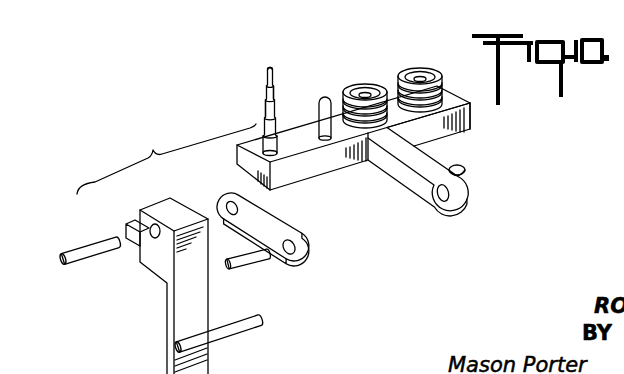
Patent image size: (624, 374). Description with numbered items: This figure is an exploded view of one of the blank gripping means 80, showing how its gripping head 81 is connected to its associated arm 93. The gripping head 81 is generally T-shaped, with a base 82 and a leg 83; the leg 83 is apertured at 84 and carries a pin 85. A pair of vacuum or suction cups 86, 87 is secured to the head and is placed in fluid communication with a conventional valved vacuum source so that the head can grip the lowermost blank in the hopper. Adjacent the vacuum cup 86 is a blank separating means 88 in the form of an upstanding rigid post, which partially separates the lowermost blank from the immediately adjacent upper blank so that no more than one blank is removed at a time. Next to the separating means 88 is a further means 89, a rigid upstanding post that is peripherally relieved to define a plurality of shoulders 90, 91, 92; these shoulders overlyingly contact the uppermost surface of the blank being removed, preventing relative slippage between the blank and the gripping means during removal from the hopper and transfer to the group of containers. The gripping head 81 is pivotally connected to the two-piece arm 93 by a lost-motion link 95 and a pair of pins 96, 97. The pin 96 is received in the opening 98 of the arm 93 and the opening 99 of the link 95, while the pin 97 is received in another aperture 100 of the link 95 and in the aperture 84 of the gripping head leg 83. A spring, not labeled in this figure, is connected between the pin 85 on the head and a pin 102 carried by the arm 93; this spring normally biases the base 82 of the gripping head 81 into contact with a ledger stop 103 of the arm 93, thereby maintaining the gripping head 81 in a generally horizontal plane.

The blank gripping means 80 is at (452, 76).
The gripping head 81 is at (468, 126).
The base 82 is at (339, 163).
The leg 83 is at (404, 171).
The aperture 84 is at (438, 202).
The pin 85 is at (464, 168).
The vacuum cup 86 is at (365, 86).
The vacuum cup 87 is at (425, 70).
The blank separating means 88 is at (328, 97).
The rigid upstanding post 89 is at (273, 66).
The shoulder 90 is at (275, 122).
The shoulder 91 is at (263, 106).
The shoulder 92 is at (278, 86).
The two-piece arm 93 is at (182, 308).
The lost-motion link 95 is at (310, 210).
The pin 96 is at (91, 249).
The pin 97 is at (263, 267).
The opening 98 is at (156, 225).
The opening 99 is at (224, 209).
The aperture 100 is at (285, 257).
The pin 102 is at (270, 326).
The ledger stop 103 is at (131, 236).